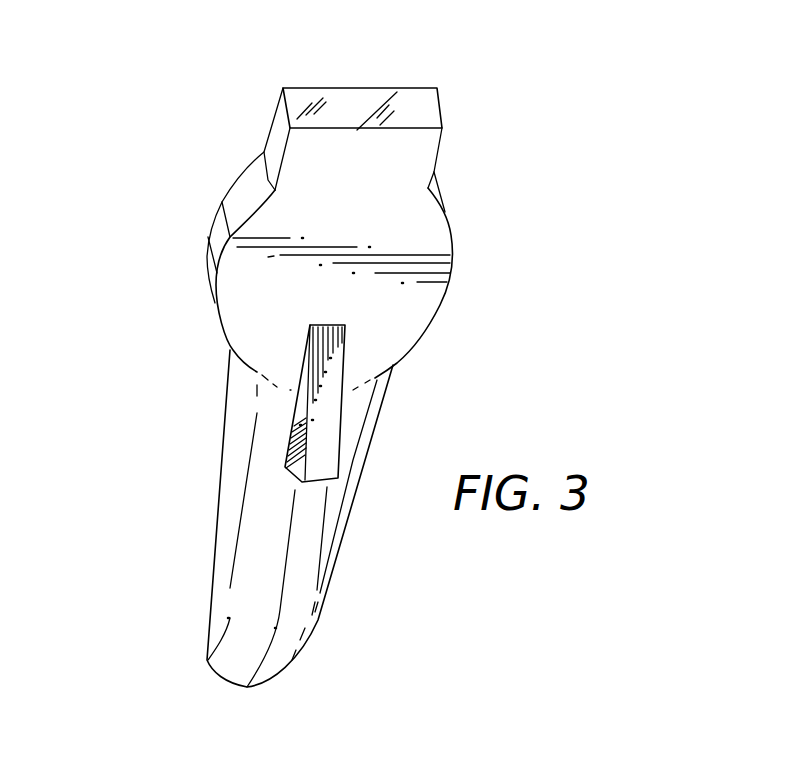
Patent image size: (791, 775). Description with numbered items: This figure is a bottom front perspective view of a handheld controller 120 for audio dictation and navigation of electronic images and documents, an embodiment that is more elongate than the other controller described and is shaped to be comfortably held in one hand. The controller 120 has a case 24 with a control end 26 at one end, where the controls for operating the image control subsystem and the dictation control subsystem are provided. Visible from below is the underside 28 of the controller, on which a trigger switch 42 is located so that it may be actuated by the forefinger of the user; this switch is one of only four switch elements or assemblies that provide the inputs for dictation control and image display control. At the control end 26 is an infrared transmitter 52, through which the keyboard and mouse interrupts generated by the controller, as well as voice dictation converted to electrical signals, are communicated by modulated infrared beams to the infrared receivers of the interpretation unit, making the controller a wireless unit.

The infrared transmitter 52 is at (352, 104).
The control end 26 is at (440, 152).
The controller 120 is at (452, 300).
The trigger switch 42 is at (328, 452).
The case 24 is at (233, 487).
The underside 28 is at (293, 570).